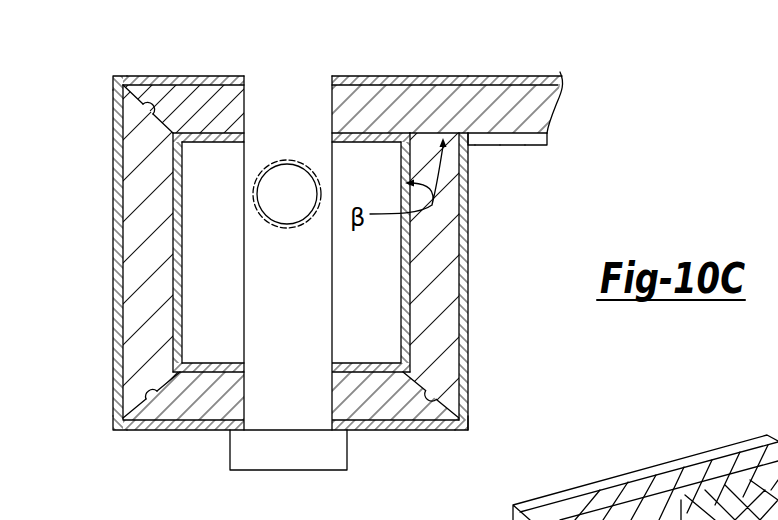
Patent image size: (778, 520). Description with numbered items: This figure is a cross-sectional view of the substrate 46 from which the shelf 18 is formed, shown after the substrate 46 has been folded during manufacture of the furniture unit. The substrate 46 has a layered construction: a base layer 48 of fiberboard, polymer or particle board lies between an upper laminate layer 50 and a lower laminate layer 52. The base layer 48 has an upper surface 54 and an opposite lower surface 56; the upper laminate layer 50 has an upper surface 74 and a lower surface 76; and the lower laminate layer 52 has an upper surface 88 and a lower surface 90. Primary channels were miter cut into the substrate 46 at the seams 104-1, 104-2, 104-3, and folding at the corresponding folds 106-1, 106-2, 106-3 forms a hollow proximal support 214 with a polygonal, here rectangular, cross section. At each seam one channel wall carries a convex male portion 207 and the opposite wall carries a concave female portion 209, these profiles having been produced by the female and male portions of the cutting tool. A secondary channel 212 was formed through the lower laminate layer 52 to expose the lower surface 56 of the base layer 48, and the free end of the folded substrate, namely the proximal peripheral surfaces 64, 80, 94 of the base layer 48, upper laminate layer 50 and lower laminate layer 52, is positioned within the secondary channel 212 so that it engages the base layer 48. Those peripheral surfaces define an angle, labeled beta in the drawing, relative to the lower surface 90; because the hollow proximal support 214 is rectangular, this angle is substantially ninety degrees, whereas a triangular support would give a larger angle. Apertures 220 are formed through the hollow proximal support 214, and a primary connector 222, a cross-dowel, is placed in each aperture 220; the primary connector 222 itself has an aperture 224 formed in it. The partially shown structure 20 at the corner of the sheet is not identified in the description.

The shelf 18 is at (548, 118).
The vehicle structure 20 is at (741, 442).
The substrate 46 is at (577, 76).
The base layer 48 is at (498, 95).
The upper laminate layer 50 is at (537, 78).
The lower laminate layer 52 is at (535, 146).
The upper surface 54 is at (442, 85).
The lower surface 56 is at (517, 146).
The proximal peripheral surface 64 is at (422, 133).
The upper surface 74 is at (150, 76).
The lower surface 76 is at (158, 100).
The proximal peripheral surface 80 is at (462, 133).
The upper surface 88 is at (518, 132).
The lower surface 90 is at (482, 146).
The proximal peripheral surface 94 is at (405, 133).
The first seam 104-1 is at (458, 404).
The second seam 104-2 is at (163, 380).
The seam 104-3 is at (131, 98).
The fold 106-1 is at (468, 431).
The fold 106-2 is at (110, 431).
The fold 106-3 is at (113, 76).
The male portion 207 is at (163, 108).
The female portion 209 is at (146, 104).
The secondary channel 212 is at (455, 165).
The hollow proximal support 214 is at (104, 229).
The aperture 220 is at (250, 102).
The primary connector 222 is at (244, 313).
The aperture 224 is at (288, 220).